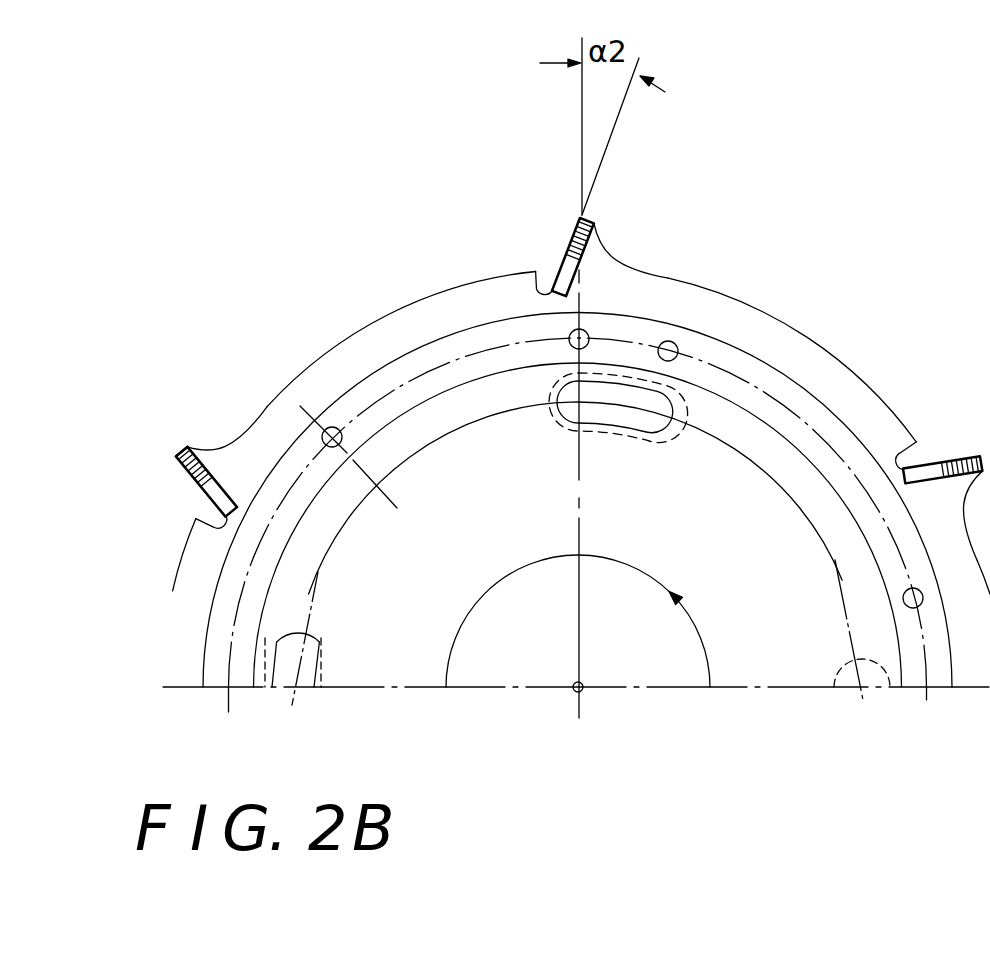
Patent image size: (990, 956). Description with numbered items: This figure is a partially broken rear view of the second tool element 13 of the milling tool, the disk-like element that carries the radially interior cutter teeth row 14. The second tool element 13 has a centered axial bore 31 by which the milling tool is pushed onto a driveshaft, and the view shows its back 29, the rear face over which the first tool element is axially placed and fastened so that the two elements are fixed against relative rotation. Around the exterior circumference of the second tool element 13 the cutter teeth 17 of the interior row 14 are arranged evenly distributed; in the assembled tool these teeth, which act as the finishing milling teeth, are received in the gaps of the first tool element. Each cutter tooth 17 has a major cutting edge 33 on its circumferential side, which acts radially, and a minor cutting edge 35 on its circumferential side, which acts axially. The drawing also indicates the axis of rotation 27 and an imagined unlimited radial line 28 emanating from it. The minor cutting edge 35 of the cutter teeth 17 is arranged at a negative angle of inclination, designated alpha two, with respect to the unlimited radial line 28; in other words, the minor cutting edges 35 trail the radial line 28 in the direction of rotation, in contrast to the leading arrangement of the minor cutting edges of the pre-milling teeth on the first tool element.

The second tool element 13 is at (345, 282).
The radially interior cutter teeth row 14 is at (207, 447).
The cutter teeth 17 is at (205, 445).
The major cutting edge 33 is at (190, 448).
The minor cutting edge 35 is at (192, 480).
The back 29 is at (412, 600).
The unlimited radial line 28 is at (580, 595).
The axis of rotation 27 is at (573, 690).
The centered axial bore 31 is at (708, 687).